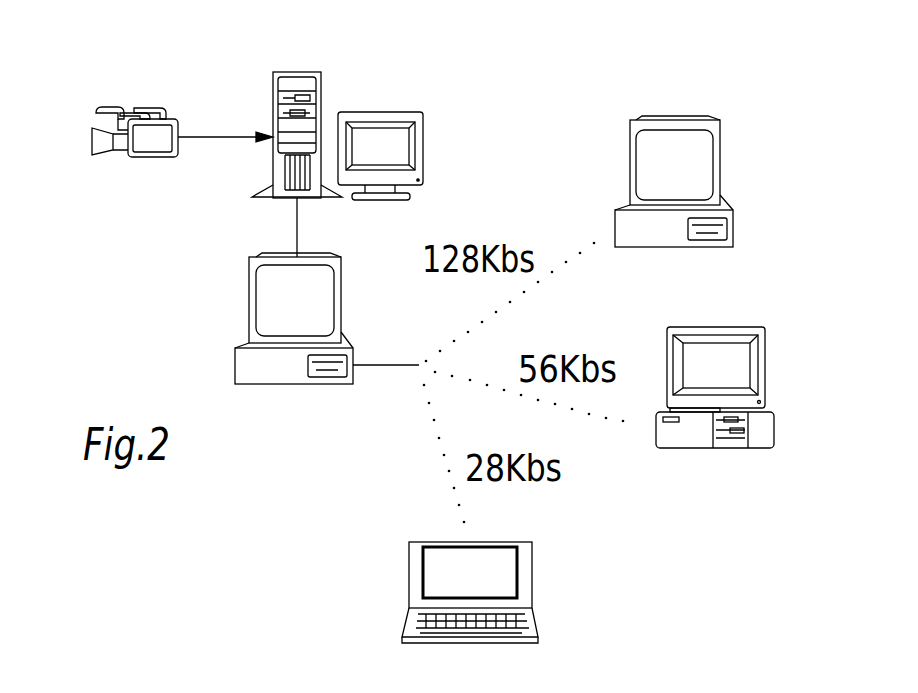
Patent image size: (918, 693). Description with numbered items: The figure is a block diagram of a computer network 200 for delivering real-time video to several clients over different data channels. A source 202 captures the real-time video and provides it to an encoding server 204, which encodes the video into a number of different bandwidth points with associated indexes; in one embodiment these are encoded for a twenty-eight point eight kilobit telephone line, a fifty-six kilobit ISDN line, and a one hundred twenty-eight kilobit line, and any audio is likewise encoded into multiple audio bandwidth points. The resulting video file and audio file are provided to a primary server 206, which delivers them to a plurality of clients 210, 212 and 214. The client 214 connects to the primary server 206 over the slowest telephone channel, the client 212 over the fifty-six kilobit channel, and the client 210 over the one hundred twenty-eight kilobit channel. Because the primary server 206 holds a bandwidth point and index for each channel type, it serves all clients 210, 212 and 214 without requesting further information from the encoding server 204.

The computer network 200 is at (742, 56).
The source 202 is at (92, 141).
The encoding server 204 is at (423, 140).
The primary server 206 is at (249, 292).
The client 210 is at (733, 217).
The client 212 is at (774, 437).
The client 214 is at (411, 564).